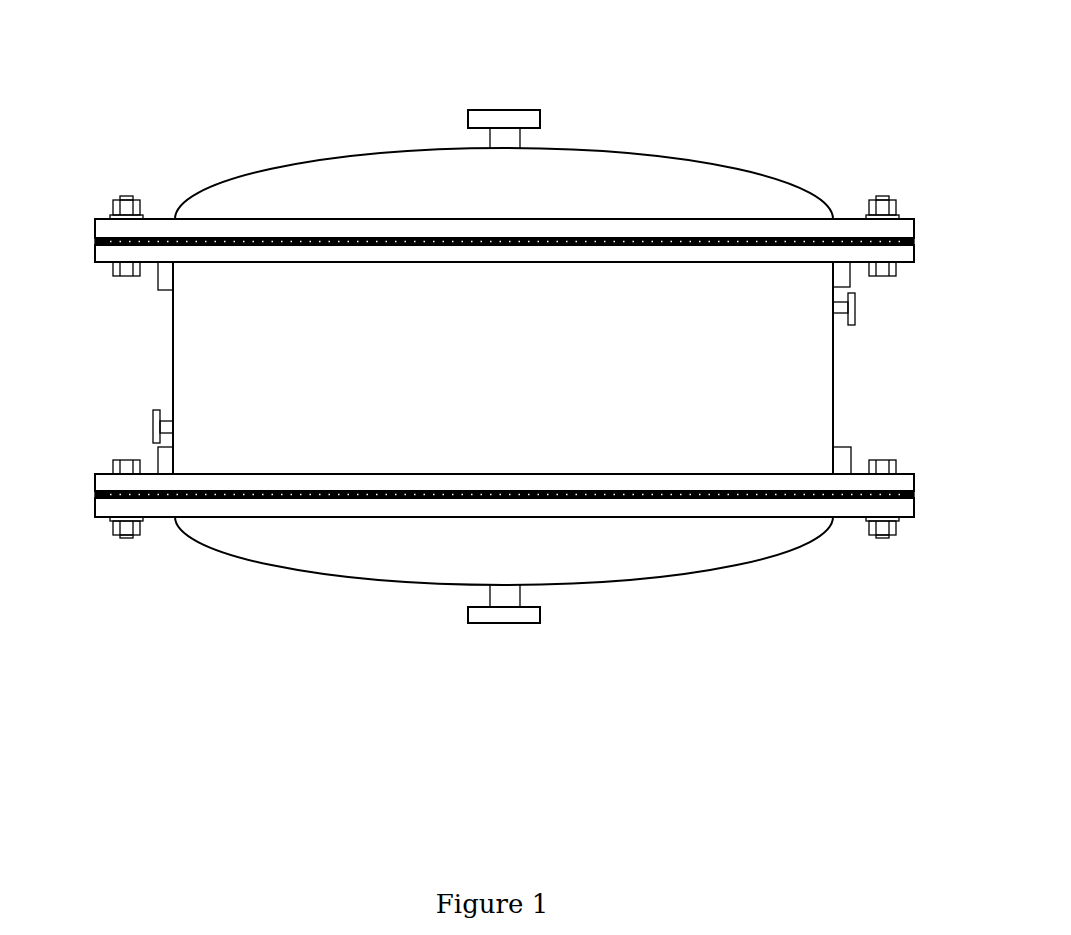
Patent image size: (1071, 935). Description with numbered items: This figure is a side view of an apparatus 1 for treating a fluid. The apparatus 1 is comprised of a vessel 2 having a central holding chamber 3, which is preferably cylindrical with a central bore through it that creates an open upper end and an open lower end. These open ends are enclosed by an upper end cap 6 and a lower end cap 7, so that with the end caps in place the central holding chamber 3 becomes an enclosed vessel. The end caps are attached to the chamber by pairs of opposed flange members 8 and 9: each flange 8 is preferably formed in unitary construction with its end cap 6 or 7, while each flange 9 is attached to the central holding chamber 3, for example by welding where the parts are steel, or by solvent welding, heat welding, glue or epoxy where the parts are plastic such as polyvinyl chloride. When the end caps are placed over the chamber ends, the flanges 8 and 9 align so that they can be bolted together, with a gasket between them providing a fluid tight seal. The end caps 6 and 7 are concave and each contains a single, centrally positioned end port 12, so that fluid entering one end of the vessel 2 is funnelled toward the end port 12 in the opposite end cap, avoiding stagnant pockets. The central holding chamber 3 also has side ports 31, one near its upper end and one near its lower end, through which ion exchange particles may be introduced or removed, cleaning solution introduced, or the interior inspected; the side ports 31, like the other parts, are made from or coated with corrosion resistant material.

The apparatus 1 is at (307, 138).
The vessel 2 is at (585, 308).
The central holding chamber 3 is at (835, 379).
The upper end cap 6 is at (662, 185).
The lower end cap 7 is at (280, 542).
The flange member 8 is at (113, 230).
The flange member 9 is at (107, 249).
The end port 12 is at (500, 113).
The side port 31 is at (153, 426).